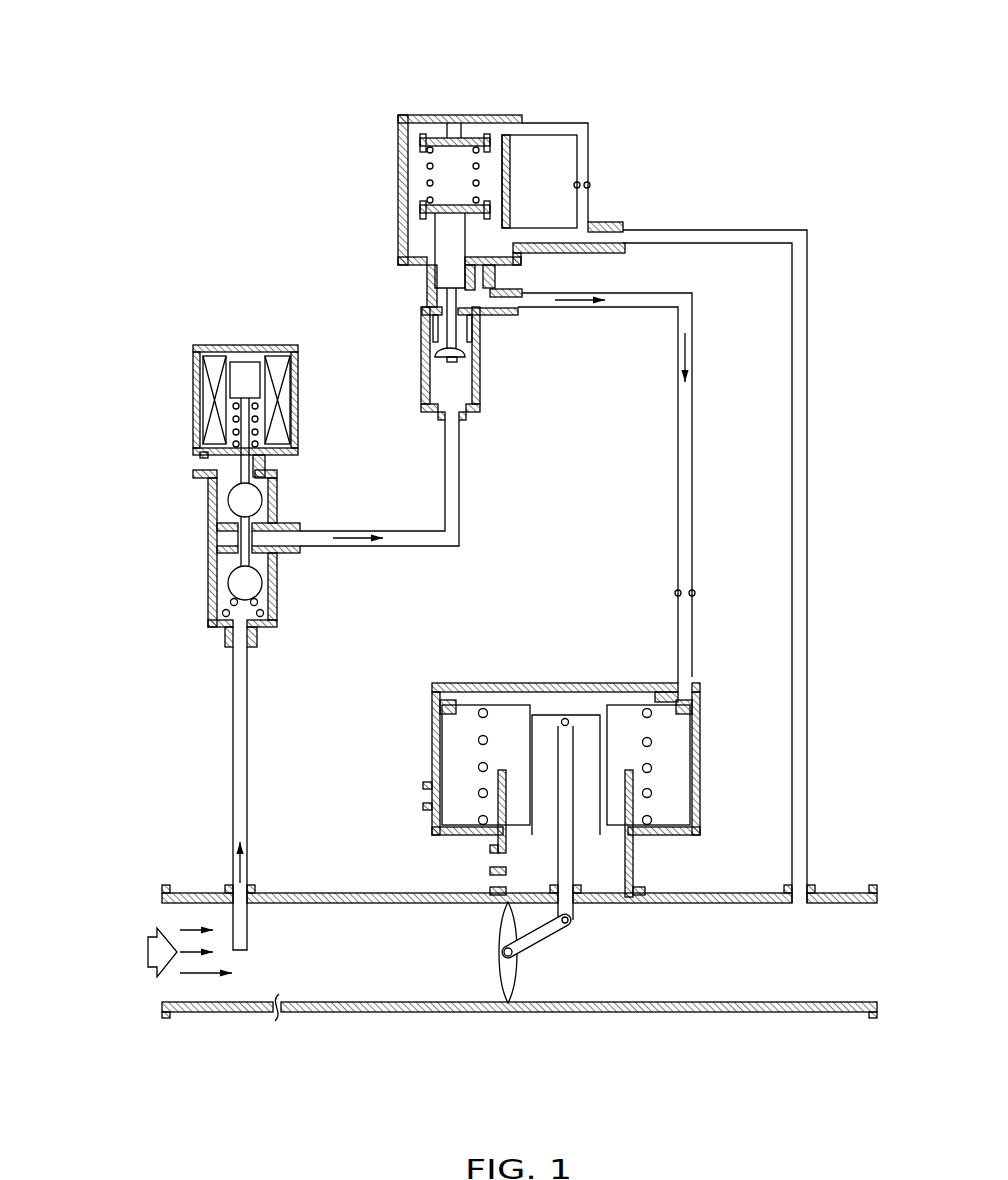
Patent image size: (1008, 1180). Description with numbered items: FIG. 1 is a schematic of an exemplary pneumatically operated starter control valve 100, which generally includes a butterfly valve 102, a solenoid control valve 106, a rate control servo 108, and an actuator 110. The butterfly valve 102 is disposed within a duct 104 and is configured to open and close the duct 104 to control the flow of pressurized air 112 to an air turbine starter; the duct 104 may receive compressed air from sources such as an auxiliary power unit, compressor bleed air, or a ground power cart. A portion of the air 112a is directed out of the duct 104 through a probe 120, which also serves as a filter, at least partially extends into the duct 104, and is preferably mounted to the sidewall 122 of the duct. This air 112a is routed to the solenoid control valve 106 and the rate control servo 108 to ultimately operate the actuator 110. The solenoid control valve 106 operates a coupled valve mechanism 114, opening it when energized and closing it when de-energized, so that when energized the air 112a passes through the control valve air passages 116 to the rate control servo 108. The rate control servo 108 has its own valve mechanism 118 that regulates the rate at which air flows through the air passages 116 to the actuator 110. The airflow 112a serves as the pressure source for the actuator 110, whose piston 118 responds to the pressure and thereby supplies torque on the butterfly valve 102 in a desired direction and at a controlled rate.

The starter control valve 100 is at (799, 185).
The butterfly valve 102 is at (538, 986).
The duct 104 is at (519, 970).
The solenoid control valve 106 is at (181, 469).
The rate control servo 108 is at (469, 100).
The actuator 110 is at (567, 679).
The pressurized air 112 is at (97, 974).
The portion of the air 112a is at (247, 853).
The valve mechanism 114 is at (222, 578).
The control valve air passages 116 is at (459, 465).
The valve mechanism 118 is at (449, 356).
The probe 120 is at (220, 913).
The sidewall 122 is at (445, 1013).